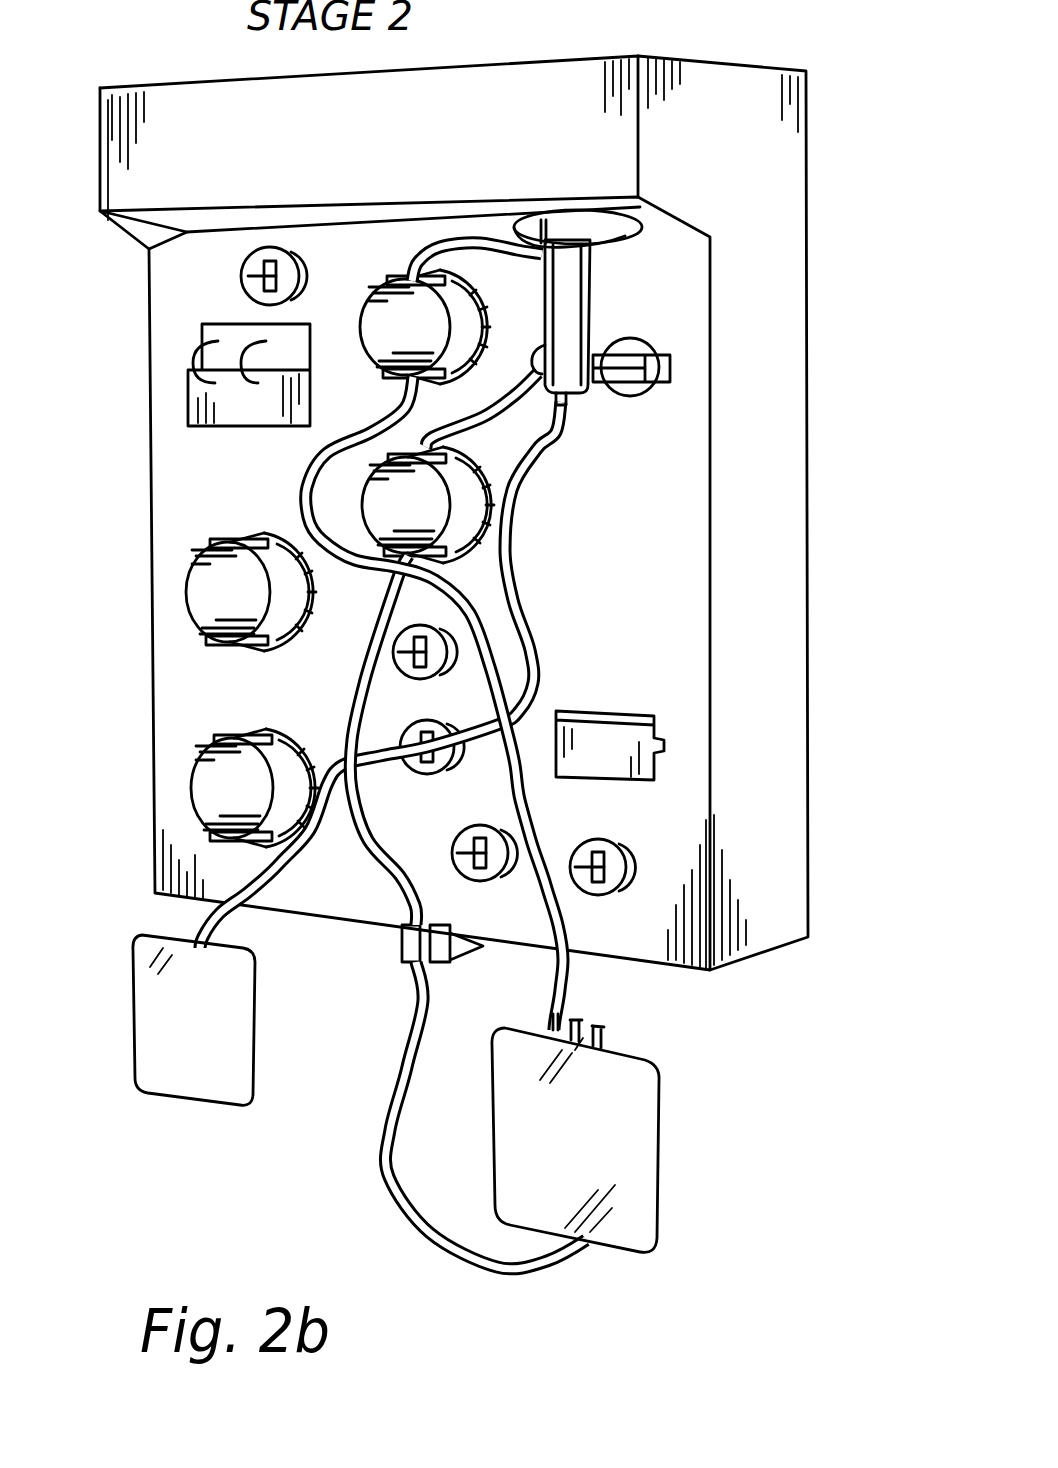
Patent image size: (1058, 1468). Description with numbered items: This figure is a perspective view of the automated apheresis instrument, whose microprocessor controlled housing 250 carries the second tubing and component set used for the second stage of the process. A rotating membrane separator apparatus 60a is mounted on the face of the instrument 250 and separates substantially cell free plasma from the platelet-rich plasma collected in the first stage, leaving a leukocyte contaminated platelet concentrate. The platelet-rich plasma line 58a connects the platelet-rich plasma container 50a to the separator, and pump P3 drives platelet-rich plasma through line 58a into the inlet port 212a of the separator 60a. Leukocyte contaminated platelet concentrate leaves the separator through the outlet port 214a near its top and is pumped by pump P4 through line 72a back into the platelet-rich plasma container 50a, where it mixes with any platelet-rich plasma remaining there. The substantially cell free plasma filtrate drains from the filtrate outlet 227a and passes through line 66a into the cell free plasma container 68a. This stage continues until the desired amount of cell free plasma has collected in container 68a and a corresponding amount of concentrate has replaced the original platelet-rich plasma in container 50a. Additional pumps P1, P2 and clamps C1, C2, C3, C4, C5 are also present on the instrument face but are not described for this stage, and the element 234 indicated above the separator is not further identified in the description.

The filter support 234 is at (563, 228).
The outlet port 214a is at (543, 213).
The rotating membrane separator apparatus 60a is at (655, 276).
The housing 250 is at (770, 272).
The line 72a is at (447, 240).
The inlet port 212a is at (536, 345).
The filtrate outlet 227a is at (565, 403).
The platelet-rich plasma line 58a is at (493, 415).
The line 66a is at (520, 547).
The cell free plasma container 68a is at (130, 1020).
The platelet-rich plasma container 50a is at (652, 1083).
The pump P1 is at (251, 592).
The pump P2 is at (254, 788).
The pump P3 is at (428, 505).
The pump P4 is at (425, 327).
The clamp C1 is at (407, 676).
The clamp C2 is at (422, 772).
The clamp C3 is at (468, 878).
The clamp C4 is at (626, 855).
The clamp C5 is at (299, 262).